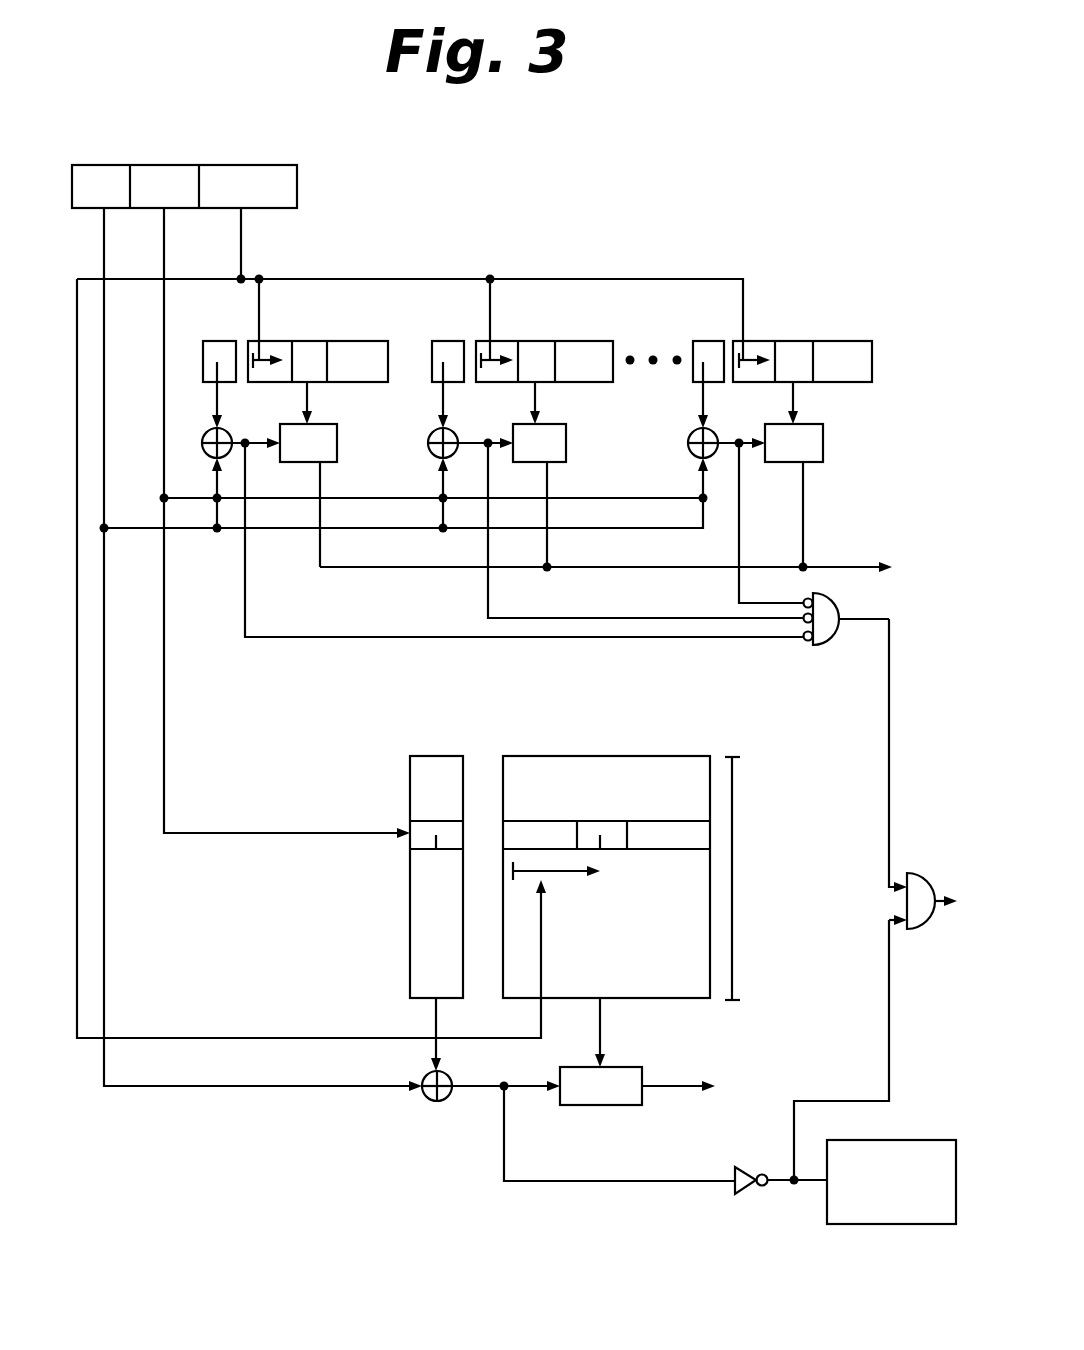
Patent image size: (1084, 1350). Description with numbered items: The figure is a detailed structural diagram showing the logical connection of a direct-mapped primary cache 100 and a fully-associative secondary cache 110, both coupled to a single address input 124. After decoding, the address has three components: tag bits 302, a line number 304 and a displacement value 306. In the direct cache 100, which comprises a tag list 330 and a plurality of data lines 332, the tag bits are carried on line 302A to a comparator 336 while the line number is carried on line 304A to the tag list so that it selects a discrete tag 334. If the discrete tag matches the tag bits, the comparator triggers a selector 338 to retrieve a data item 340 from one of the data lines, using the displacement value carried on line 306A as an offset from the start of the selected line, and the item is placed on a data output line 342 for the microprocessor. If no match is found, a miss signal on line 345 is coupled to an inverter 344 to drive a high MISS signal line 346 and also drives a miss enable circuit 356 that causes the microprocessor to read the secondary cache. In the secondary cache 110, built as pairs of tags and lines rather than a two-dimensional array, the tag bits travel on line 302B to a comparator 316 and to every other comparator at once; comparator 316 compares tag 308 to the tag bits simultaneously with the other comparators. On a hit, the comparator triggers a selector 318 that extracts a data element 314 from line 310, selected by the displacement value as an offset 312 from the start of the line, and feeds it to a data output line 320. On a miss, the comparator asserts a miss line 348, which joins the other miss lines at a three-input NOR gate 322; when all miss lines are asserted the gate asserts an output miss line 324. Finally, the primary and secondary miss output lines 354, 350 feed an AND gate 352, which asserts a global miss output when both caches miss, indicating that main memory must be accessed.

The address input 124 is at (312, 170).
The displacement value 306 is at (297, 201).
The tag bits 302 is at (110, 212).
The line number 304 is at (175, 212).
The secondary cache 110 is at (742, 268).
The offset 312 is at (271, 338).
The tag 308 is at (205, 357).
The line 310 is at (343, 374).
The data element 314 is at (316, 378).
The comparator 316 is at (204, 444).
The selector 318 is at (330, 462).
The data output line 320 is at (820, 567).
The line 302B is at (196, 530).
The miss line 348 is at (248, 617).
The 3-input NOR gate 322 is at (826, 646).
The output miss line 324 is at (848, 620).
The direct cache 100 is at (792, 737).
The tag list 330 is at (410, 764).
The data lines 332 is at (505, 762).
The line 304A is at (286, 833).
The discrete tag 334 is at (416, 840).
The data item 340 is at (611, 850).
The secondary miss output line 350 is at (889, 785).
The AND gate 352 is at (922, 873).
The primary miss output line 354 is at (889, 985).
The line 306A is at (272, 1038).
The line 302A is at (283, 1087).
The comparator 336 is at (427, 1098).
The selector 338 is at (599, 1105).
The data output line 342 is at (665, 1086).
The inverter 344 is at (748, 1167).
The line 345 is at (593, 1182).
The MISS signal line 346 is at (768, 1189).
The miss enable circuit 356 is at (866, 1224).